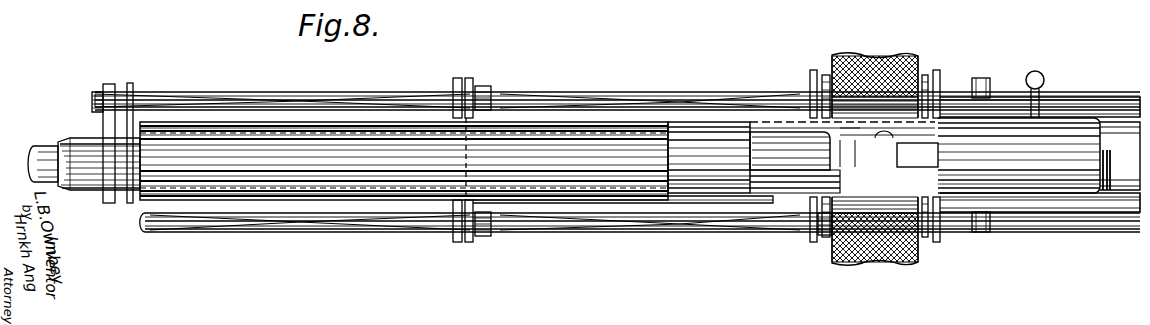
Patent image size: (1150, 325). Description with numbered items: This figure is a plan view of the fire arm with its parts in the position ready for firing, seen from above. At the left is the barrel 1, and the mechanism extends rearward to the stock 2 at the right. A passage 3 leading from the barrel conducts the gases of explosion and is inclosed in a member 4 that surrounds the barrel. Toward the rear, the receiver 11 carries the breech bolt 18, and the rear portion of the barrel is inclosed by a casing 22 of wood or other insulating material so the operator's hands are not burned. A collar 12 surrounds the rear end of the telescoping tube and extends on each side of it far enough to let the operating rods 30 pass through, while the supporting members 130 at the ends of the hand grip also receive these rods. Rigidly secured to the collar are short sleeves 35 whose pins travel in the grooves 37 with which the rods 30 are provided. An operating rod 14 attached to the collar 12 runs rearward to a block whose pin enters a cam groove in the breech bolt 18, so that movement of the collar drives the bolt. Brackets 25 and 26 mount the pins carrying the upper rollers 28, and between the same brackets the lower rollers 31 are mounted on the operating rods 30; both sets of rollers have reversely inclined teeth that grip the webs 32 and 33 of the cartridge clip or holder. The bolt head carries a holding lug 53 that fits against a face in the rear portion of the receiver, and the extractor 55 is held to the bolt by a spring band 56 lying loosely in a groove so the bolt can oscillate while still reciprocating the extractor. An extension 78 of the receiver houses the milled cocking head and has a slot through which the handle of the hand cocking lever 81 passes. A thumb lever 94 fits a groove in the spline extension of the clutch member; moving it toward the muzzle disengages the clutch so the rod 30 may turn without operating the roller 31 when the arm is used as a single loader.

The barrel 1 is at (43, 152).
The stock 2 is at (1110, 212).
The passage 3 is at (862, 54).
The member 4 is at (72, 140).
The receiver 11 is at (1063, 137).
The collar 12 is at (466, 240).
The operating rod 14 is at (625, 203).
The breech bolt 18 is at (792, 142).
The casing 22 is at (276, 158).
The bracket 25 is at (812, 242).
The bracket 26 is at (938, 242).
The upper roller 28 is at (868, 262).
The operating rod 30 is at (965, 232).
The lower roller 31 is at (926, 237).
The web 32 is at (849, 56).
The web 33 is at (888, 246).
The short sleeve 35 is at (490, 236).
The groove 37 is at (565, 232).
The holding lug 53 is at (917, 155).
The extractor 55 is at (783, 193).
The spring band 56 is at (824, 235).
The extension of the receiver 78 is at (1106, 145).
The hand cocking lever 81 is at (1042, 76).
The thumb lever 94 is at (978, 232).
The supporting member 130 is at (129, 84).